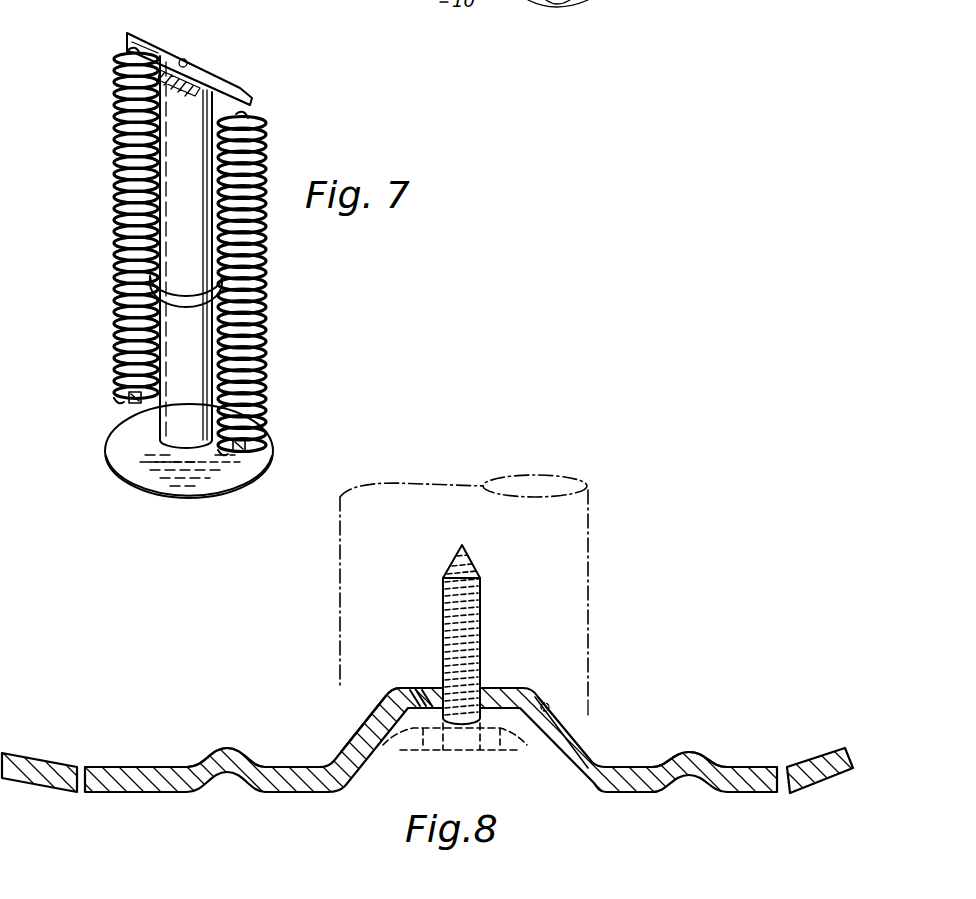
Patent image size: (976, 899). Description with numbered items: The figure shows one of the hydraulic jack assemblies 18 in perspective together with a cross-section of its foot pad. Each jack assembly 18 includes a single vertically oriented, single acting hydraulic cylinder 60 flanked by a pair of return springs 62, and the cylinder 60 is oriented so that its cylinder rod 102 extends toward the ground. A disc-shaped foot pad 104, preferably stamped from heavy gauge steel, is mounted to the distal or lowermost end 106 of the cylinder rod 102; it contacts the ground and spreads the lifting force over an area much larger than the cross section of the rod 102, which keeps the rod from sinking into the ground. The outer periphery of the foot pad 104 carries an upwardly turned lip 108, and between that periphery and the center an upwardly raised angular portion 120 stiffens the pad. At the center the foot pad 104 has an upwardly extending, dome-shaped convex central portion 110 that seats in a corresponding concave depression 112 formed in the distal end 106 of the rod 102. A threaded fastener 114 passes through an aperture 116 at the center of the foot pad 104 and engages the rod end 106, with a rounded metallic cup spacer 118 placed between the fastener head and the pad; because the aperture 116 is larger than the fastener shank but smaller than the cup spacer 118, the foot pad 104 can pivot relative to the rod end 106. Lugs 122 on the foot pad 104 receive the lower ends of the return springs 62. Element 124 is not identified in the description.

In FIG. 7, the hydraulic jack assembly 18 is at (100, 225).
In FIG. 7, the hydraulic cylinder 60 is at (168, 145).
In FIG. 7, the return springs 62 is at (120, 318).
In FIG. 7, the cylinder rod 102 is at (162, 436).
In FIG. 8, the cylinder rod 102 is at (548, 532).
In FIG. 7, the foot pad 104 is at (158, 477).
In FIG. 8, the foot pad 104 is at (302, 752).
In FIG. 7, the distal end of the cylinder rod 106 is at (140, 460).
In FIG. 8, the distal end of the cylinder rod 106 is at (592, 712).
In FIG. 8, the upwardly turned lip 108 is at (23, 760).
In FIG. 8, the convex central portion 110 is at (378, 690).
In FIG. 8, the concave depression 112 is at (548, 704).
In FIG. 8, the threaded fastener 114 is at (476, 605).
In FIG. 8, the aperture 116 is at (412, 688).
In FIG. 8, the cup spacer 118 is at (384, 740).
In FIG. 8, the upwardly raised angular portion 120 is at (238, 750).
In FIG. 7, the lugs 122 is at (128, 400).
In FIG. 7, the top plate 124 is at (235, 78).